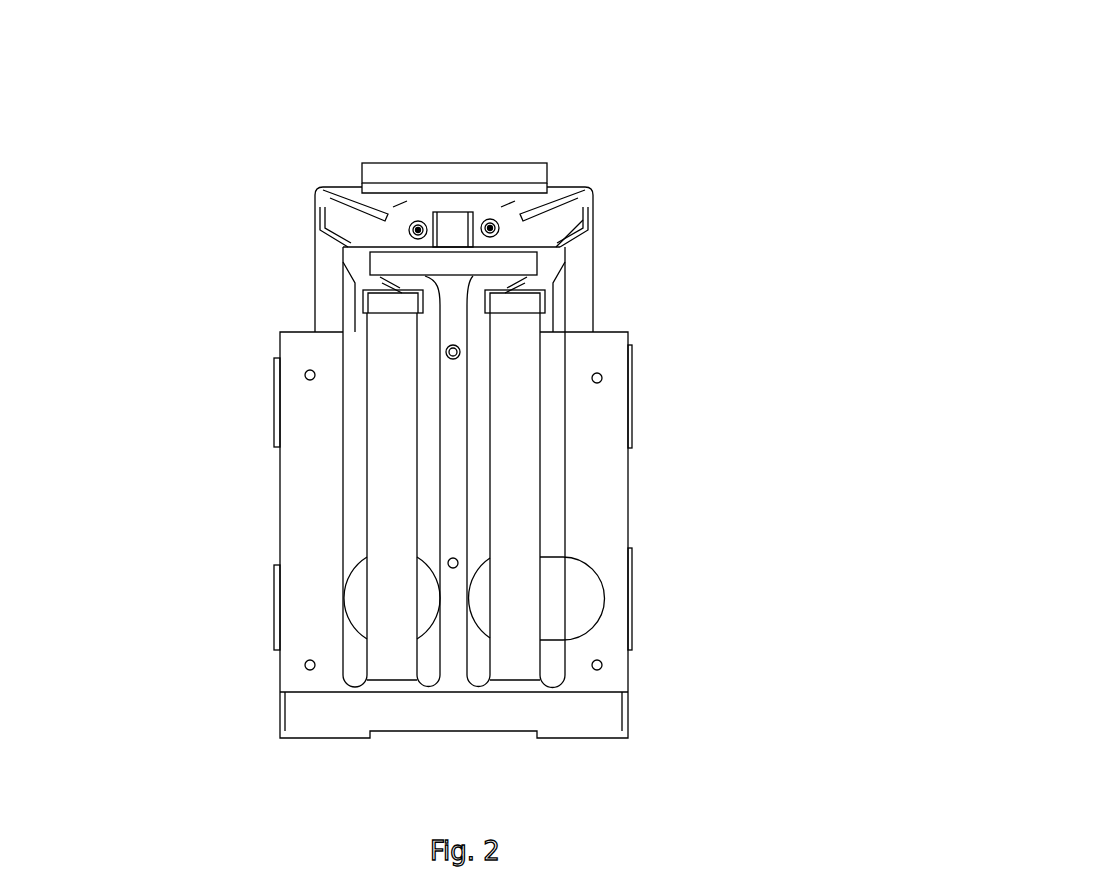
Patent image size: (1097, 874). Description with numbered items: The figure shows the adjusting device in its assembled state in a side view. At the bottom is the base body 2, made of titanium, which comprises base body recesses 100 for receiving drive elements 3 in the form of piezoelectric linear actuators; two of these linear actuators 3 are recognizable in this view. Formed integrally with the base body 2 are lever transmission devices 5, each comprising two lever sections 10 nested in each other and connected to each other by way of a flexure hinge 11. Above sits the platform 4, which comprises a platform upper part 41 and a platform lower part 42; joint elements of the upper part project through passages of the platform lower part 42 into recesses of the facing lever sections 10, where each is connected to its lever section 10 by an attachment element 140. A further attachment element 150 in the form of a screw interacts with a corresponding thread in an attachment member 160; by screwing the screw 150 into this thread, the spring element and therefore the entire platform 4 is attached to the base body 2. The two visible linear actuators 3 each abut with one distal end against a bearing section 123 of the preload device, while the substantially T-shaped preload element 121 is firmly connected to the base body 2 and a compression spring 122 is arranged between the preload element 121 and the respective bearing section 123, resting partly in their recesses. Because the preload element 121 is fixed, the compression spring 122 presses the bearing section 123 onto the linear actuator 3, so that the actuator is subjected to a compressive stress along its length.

The base body 2 is at (609, 510).
The drive element 3 is at (528, 435).
The base body recess 100 is at (557, 527).
The platform 4 is at (449, 115).
The platform upper part 41 is at (450, 176).
The platform lower part 42 is at (390, 193).
The lever transmission device 5 is at (300, 197).
The attachment element 140 is at (496, 222).
The attachment element 150 is at (409, 229).
The lever section 10 is at (530, 228).
The flexure hinge 11 is at (556, 247).
The attachment member 160 is at (377, 278).
The compression spring 122 is at (517, 279).
The bearing section 123 is at (387, 305).
The preload element 121 is at (450, 336).